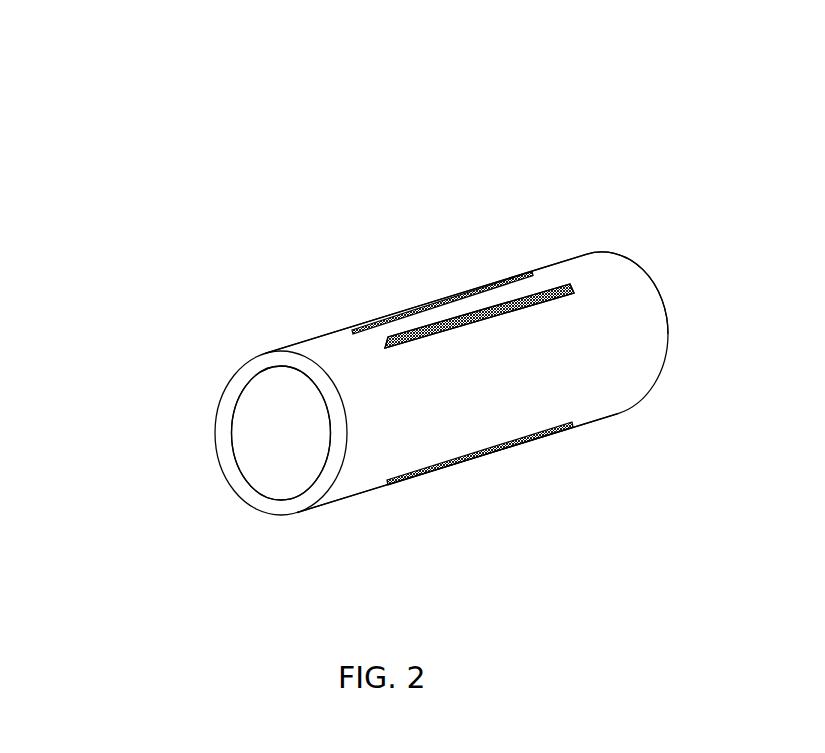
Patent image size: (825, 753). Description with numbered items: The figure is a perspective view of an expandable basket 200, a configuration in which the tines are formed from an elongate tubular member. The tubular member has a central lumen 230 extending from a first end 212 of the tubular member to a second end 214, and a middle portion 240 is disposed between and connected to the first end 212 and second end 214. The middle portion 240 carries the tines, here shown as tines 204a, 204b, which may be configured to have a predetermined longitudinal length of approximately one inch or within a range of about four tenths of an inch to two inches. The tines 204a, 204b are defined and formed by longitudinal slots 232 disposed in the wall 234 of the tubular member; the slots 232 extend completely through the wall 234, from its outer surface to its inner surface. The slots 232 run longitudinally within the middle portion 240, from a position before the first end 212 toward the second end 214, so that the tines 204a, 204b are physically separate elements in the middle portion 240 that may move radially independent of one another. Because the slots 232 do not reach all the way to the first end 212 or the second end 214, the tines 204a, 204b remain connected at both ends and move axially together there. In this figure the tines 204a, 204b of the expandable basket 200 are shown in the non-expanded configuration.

The expandable basket 200 is at (112, 117).
The first end 212 is at (328, 352).
The second end 214 is at (598, 268).
The central lumen 230 is at (272, 479).
The wall 234 is at (317, 490).
The tine 204a is at (460, 310).
The tine 204b is at (485, 392).
The longitudinal slots 232 is at (418, 338).
The middle portion 240 is at (542, 383).